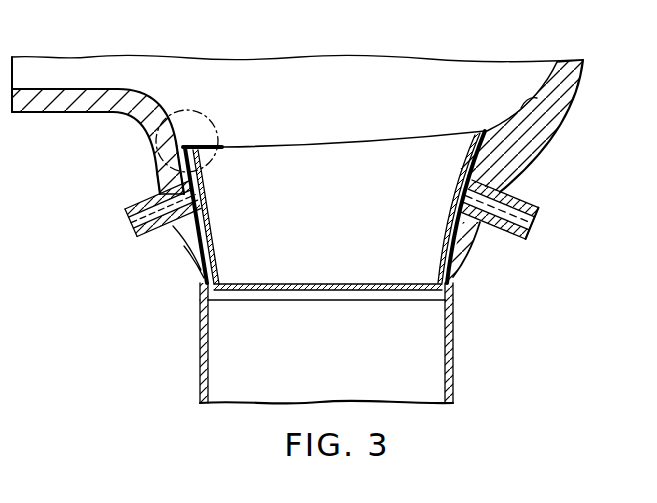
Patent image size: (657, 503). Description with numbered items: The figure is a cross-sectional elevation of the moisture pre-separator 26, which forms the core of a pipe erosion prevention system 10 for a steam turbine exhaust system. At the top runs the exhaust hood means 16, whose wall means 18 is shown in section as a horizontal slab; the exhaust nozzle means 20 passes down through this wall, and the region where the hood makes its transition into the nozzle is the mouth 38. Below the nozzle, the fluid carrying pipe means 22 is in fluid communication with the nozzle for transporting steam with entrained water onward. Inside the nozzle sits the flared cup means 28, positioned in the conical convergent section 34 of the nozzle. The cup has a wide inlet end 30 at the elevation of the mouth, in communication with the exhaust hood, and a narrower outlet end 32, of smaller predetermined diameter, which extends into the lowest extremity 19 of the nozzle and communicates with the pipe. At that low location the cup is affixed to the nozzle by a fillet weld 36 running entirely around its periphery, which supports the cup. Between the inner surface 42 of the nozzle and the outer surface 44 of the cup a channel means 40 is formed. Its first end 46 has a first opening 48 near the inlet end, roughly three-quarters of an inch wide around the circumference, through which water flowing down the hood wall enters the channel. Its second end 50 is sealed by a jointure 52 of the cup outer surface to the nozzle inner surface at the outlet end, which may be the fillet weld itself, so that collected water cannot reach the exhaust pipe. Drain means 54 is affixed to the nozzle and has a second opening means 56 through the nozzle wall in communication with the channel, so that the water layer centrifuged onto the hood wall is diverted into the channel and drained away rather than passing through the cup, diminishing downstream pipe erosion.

The pipe erosion prevention system 10 is at (378, 24).
The exhaust hood means 16 is at (583, 64).
The wall means 18 is at (78, 103).
The lowest extremity 19 is at (202, 280).
The exhaust nozzle means 20 is at (152, 285).
The fluid carrying pipe means 22 is at (455, 345).
The moisture pre-separator 26 is at (612, 216).
The cup means 28 is at (497, 168).
The inlet end 30 is at (417, 140).
The outlet end 32 is at (452, 290).
The conical convergent section 34 is at (148, 188).
The fillet weld 36 is at (453, 307).
The mouth 38 is at (573, 103).
The channel means 40 is at (482, 147).
The inner surface 42 is at (541, 212).
The outer surface 44 is at (488, 133).
The first end 46 is at (168, 154).
The first opening 48 is at (180, 146).
The second end 50 is at (468, 262).
The jointure 52 is at (203, 292).
The drain means 54 is at (142, 248).
The second opening means 56 is at (530, 242).